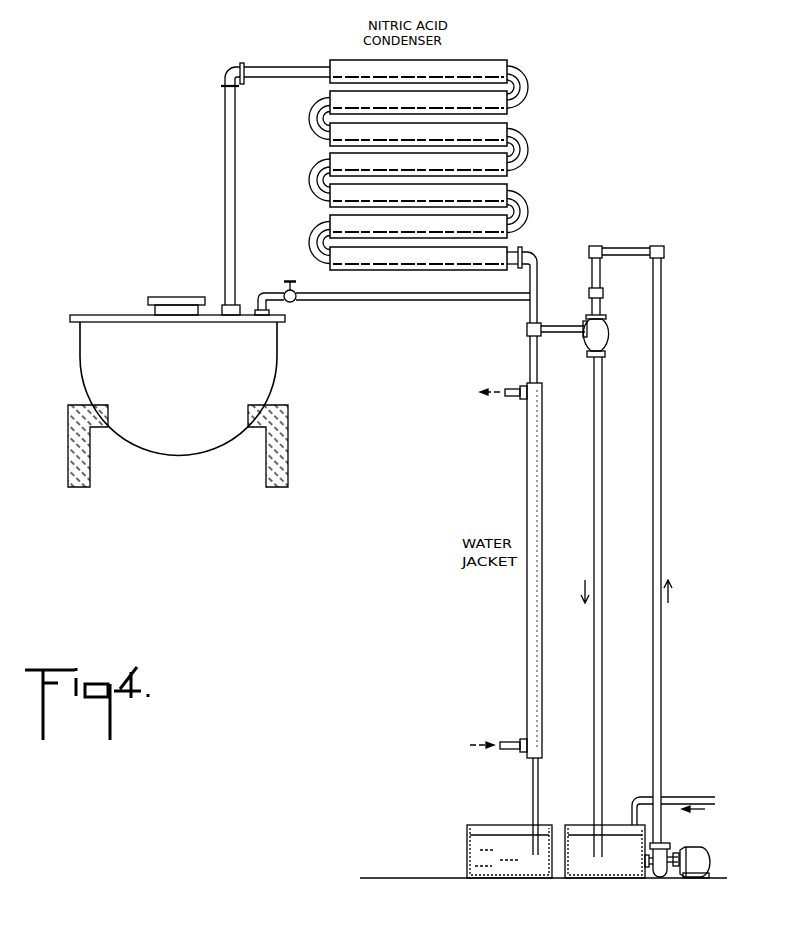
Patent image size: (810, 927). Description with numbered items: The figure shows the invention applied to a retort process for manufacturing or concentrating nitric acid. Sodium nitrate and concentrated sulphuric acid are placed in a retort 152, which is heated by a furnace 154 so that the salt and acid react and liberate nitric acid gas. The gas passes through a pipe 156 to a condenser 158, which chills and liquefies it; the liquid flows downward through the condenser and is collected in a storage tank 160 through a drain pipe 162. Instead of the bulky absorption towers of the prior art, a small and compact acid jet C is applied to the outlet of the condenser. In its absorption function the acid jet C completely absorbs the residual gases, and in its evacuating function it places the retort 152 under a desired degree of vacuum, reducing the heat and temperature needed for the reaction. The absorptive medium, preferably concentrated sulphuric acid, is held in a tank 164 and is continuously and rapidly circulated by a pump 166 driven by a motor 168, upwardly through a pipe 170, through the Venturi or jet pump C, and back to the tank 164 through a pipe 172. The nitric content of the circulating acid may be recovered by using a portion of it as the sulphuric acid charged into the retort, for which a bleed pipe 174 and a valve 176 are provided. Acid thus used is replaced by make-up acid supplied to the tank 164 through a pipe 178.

The retort 152 is at (88, 372).
The furnace 154 is at (178, 448).
The pipe 156 is at (236, 183).
The condenser 158 is at (515, 120).
The storage tank 160 is at (475, 845).
The drain pipe 162 is at (530, 307).
The tank 164 is at (580, 822).
The pump 166 is at (664, 845).
The motor 168 is at (690, 853).
The pipe 170 is at (662, 565).
The pipe 172 is at (603, 600).
The bleed pipe 174 is at (396, 301).
The valve 176 is at (294, 301).
The pipe 178 is at (640, 795).
The acid jet C is at (608, 320).